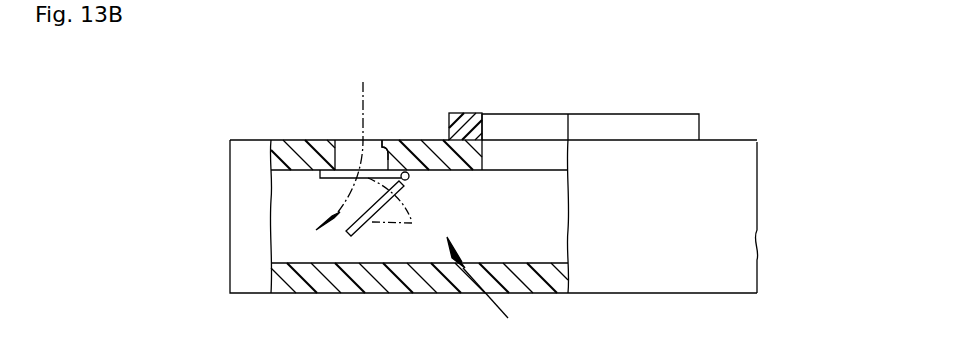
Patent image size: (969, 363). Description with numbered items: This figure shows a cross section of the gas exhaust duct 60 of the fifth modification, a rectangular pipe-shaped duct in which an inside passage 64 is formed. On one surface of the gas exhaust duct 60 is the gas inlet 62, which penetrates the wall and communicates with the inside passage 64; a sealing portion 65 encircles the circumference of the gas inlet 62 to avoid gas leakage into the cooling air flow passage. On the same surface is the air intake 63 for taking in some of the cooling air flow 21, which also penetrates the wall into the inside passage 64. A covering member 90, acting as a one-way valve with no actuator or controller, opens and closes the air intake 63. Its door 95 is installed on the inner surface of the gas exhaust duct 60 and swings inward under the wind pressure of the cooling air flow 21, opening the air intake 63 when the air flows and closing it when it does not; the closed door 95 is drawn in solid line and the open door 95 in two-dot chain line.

The cooling air flow 21 is at (360, 103).
The gas exhaust duct 60 is at (735, 142).
The gas inlet 62 is at (523, 155).
The air intake 63 is at (384, 146).
The inside passage 64 is at (287, 207).
The sealing portion 65 is at (458, 128).
The covering member 90 is at (483, 292).
The door 95 is at (410, 223).